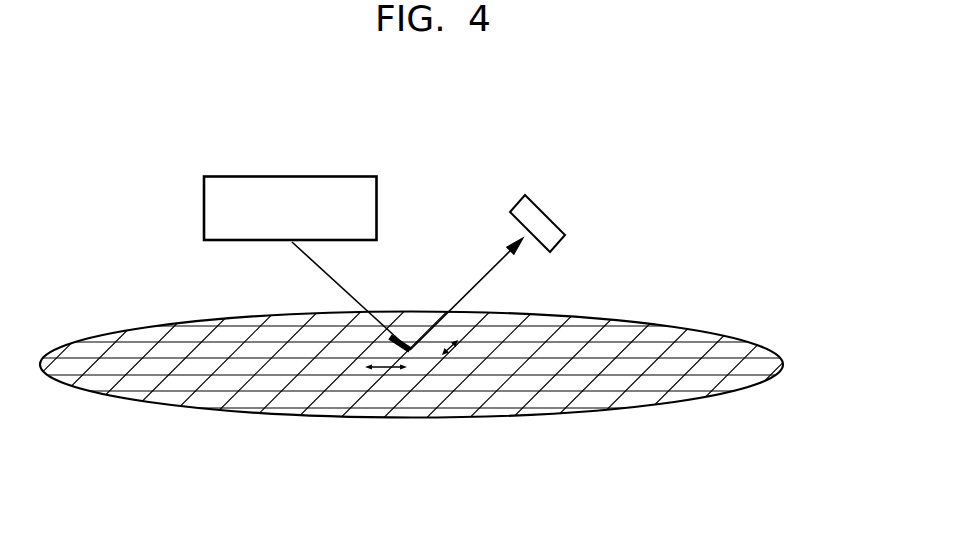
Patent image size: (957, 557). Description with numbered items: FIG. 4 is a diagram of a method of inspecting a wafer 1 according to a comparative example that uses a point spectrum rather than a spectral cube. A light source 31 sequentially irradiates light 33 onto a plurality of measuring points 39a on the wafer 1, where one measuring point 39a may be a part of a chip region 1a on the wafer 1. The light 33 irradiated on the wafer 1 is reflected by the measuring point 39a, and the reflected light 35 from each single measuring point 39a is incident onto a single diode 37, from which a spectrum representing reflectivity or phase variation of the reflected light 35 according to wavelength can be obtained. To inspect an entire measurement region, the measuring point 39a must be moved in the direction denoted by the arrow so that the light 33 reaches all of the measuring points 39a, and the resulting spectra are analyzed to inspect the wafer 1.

The wafer 1 is at (783, 362).
The chip region 1a is at (712, 367).
The light source 31 is at (292, 176).
The light 33 is at (340, 290).
The reflected light 35 is at (465, 292).
The diode 37 is at (548, 213).
The measuring point 39a is at (408, 343).